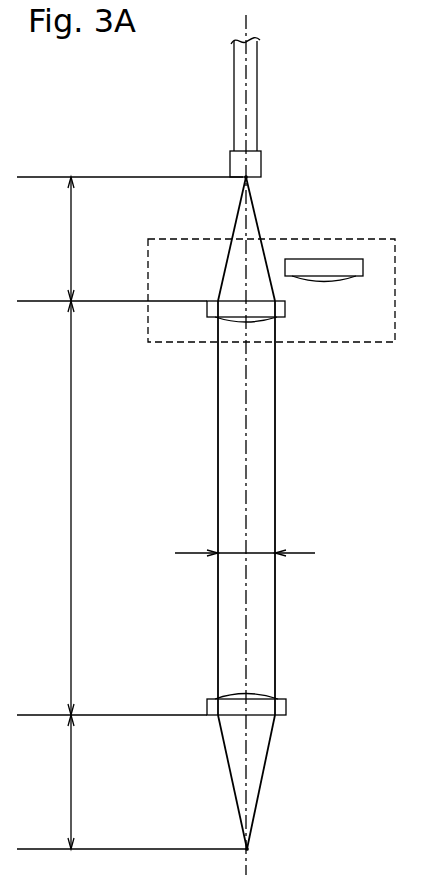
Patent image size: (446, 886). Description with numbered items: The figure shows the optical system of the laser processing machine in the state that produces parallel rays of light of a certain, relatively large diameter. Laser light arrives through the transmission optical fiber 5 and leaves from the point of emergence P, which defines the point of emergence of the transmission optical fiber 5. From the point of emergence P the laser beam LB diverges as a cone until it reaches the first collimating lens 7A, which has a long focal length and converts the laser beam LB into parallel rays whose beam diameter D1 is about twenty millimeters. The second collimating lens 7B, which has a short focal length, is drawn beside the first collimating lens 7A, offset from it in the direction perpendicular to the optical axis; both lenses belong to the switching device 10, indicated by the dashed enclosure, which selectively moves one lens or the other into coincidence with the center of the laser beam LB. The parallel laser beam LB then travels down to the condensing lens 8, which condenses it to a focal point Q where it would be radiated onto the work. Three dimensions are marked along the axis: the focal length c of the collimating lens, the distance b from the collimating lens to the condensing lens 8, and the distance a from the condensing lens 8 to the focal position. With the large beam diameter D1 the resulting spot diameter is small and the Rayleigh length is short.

The transmission optical fiber 5 is at (237, 150).
The first collimating lens 7A is at (215, 319).
The second collimating lens 7B is at (332, 265).
The condensing lens 8 is at (208, 702).
The switching device 10 is at (290, 353).
The laser beam LB is at (267, 270).
The point of emergence P is at (246, 176).
The focal point Q is at (247, 849).
The beam diameter D1 is at (250, 541).
The distance from condensing lens to focal position a is at (57, 777).
The distance from collimating lens to condensing lens b is at (58, 514).
The focal length of collimating lens c is at (55, 241).